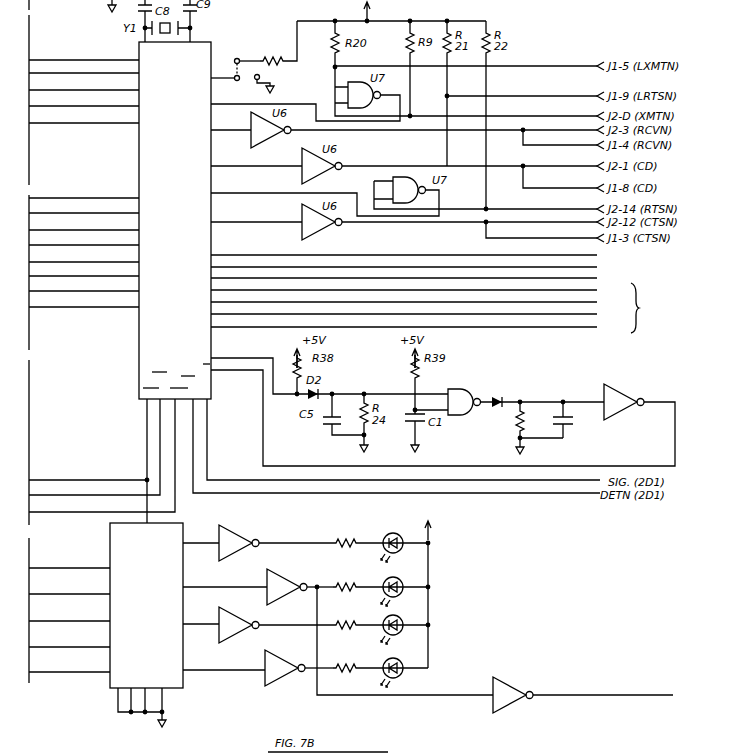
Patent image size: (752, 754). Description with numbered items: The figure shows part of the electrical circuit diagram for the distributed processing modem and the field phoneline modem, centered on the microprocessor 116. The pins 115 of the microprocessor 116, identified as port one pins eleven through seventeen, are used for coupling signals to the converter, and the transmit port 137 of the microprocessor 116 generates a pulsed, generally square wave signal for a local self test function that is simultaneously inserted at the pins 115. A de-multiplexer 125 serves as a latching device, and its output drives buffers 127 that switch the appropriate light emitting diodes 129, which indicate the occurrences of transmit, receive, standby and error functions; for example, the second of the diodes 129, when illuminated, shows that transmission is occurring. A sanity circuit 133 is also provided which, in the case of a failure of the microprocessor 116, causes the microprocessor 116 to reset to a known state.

The microprocessor 116 is at (212, 41).
The transmit port 137 is at (216, 105).
The pins 115 is at (220, 251).
The sanity circuit 133 is at (448, 374).
The buffers 127 is at (261, 532).
The de-multiplexer 125 is at (110, 534).
The light emitting diodes 129 is at (431, 536).